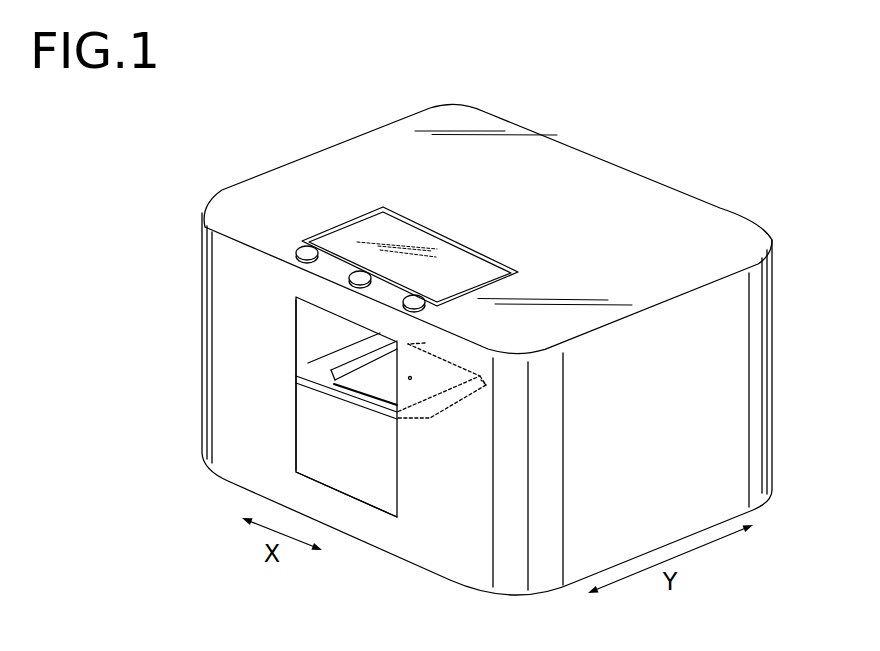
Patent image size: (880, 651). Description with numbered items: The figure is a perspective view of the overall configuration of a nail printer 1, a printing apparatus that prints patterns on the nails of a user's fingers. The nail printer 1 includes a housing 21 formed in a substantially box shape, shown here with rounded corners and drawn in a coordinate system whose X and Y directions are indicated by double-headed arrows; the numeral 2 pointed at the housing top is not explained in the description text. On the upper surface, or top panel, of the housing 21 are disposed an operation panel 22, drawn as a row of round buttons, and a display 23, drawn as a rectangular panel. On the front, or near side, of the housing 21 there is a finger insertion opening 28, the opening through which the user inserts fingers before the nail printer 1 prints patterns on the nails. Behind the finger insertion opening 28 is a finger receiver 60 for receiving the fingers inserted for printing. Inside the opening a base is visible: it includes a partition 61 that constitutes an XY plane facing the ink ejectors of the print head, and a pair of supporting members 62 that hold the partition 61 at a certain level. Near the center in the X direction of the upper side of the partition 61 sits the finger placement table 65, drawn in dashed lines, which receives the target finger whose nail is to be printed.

The nail printer 1 is at (712, 90).
The apparatus body (housing) 2 is at (535, 100).
The housing 21 is at (730, 212).
The operation panel 22 is at (412, 302).
The display 23 is at (375, 222).
The finger insertion opening 28 is at (305, 444).
The finger receiver 60 is at (350, 468).
The partition 61 is at (377, 417).
The supporting member 62 is at (302, 422).
The finger placement table 65 is at (358, 378).